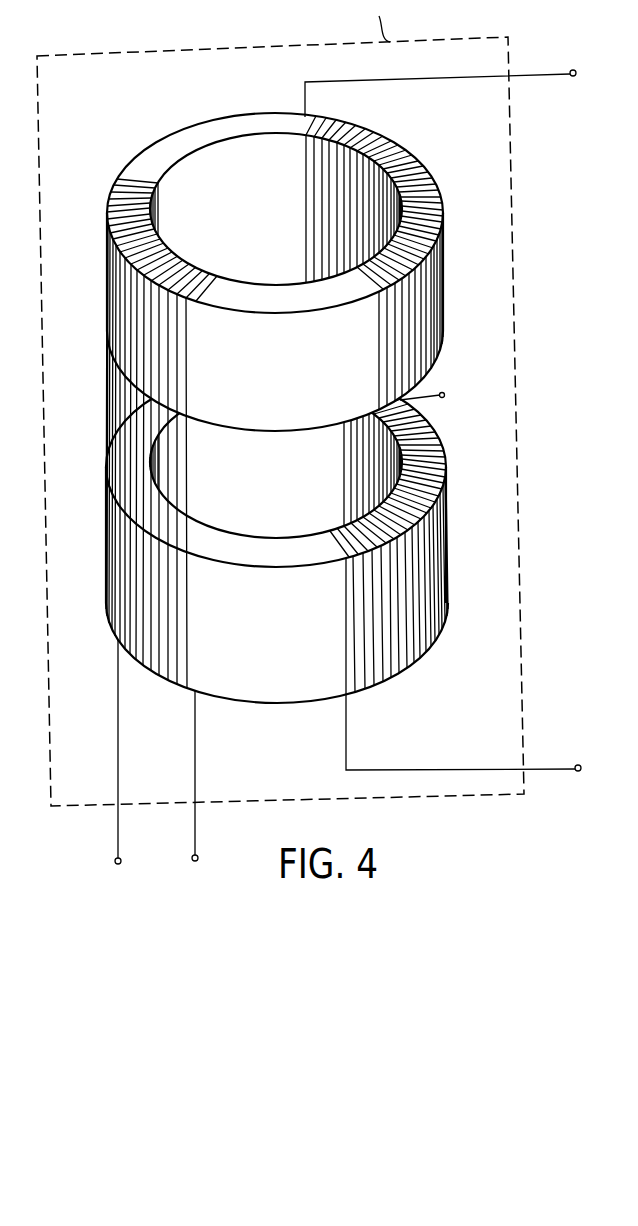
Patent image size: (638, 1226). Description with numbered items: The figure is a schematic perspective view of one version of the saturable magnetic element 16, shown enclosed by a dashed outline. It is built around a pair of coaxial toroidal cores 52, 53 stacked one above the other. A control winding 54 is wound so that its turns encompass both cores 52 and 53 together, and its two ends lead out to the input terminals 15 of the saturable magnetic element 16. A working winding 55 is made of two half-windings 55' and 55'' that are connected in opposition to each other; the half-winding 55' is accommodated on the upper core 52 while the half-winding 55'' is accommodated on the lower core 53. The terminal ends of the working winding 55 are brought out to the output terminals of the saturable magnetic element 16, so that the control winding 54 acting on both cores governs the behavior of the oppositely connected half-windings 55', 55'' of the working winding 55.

The input terminals 15 is at (155, 770).
The saturable magnetic element 16 is at (524, 623).
The toroidal core 52 is at (226, 136).
The toroidal core 53 is at (263, 690).
The control winding 54 is at (118, 553).
The working winding 55 is at (443, 420).
The half-winding 55' is at (440, 240).
The half-winding 55'' is at (455, 577).